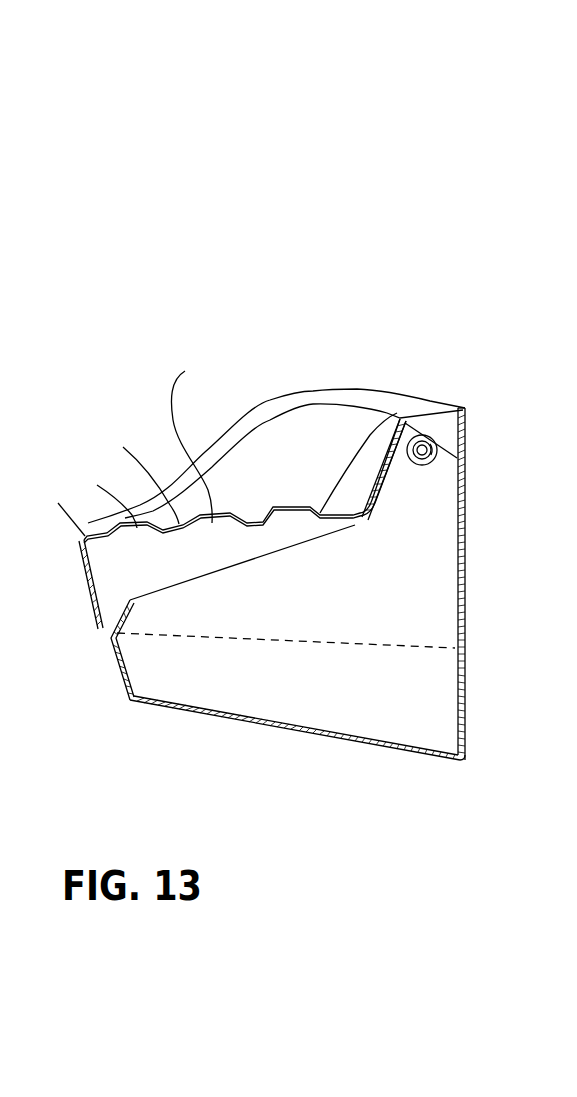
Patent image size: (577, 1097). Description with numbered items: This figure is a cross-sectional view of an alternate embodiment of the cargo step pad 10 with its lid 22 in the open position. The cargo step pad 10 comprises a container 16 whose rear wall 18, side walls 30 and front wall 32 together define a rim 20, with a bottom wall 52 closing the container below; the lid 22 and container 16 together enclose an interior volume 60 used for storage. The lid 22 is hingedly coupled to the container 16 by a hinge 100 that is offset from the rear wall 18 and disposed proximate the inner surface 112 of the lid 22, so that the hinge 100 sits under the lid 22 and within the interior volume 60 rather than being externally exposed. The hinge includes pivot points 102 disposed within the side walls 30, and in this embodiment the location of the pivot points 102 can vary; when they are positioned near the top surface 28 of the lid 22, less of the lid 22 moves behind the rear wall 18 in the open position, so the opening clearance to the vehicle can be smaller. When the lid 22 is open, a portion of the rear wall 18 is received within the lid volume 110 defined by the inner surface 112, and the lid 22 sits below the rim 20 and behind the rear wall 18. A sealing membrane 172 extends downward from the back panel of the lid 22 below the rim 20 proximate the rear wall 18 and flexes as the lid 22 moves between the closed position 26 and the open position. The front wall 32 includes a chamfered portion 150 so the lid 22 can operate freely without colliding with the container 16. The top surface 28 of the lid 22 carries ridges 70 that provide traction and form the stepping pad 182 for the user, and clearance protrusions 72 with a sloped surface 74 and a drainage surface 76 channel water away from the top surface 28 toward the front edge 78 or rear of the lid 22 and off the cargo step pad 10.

The cargo step pad 10 is at (465, 296).
The container 16 is at (176, 715).
The rear wall 18 is at (464, 733).
The rim 20 is at (130, 600).
The lid 22 is at (293, 366).
The closed position 26 is at (160, 437).
The top surface 28 is at (208, 384).
The side walls 30 is at (240, 683).
The front wall 32 is at (113, 655).
The bottom wall 52 is at (333, 737).
The interior volume 60 is at (266, 612).
The ridges 70 is at (107, 496).
The clearance protrusions 72 is at (376, 384).
The sloped surface 74 is at (247, 416).
The drainage surface 76 is at (292, 478).
The front edge 78 is at (59, 507).
The hinge 100 is at (423, 440).
The pivot points 102 is at (441, 461).
The lid volume 110 is at (216, 557).
The inner surface 112 is at (417, 508).
The chamfered portion 150 is at (117, 632).
The sealing membrane 172 is at (470, 491).
The stepping pad 182 is at (138, 473).